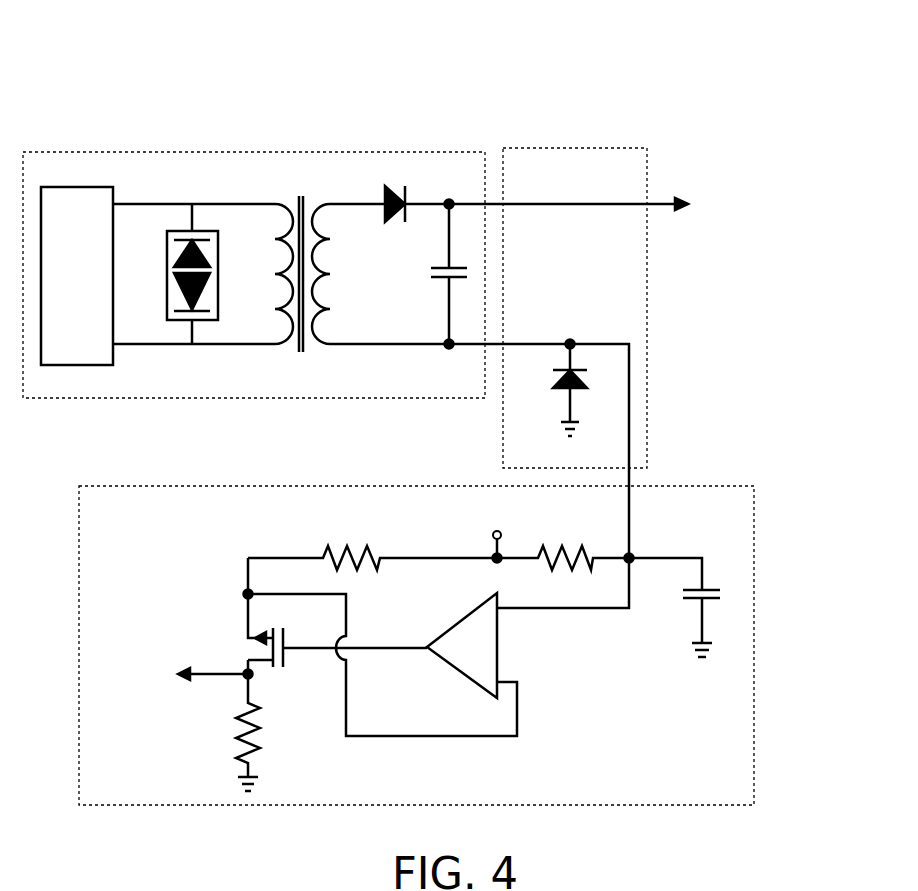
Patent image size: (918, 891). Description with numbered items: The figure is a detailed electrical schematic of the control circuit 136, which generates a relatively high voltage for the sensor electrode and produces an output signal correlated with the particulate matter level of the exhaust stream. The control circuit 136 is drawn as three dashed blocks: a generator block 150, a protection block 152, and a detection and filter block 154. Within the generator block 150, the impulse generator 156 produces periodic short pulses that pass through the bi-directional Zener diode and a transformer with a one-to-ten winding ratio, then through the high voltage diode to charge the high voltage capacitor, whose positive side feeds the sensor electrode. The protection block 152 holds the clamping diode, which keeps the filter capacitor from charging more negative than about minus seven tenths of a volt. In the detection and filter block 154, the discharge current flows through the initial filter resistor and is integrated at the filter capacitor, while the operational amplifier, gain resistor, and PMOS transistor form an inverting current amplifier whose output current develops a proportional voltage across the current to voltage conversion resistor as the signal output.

The control circuit 136 is at (196, 50).
The generator block 150 is at (127, 152).
The protection block 152 is at (555, 148).
The detection and filter block 154 is at (727, 486).
The impulse generator 156 is at (85, 365).